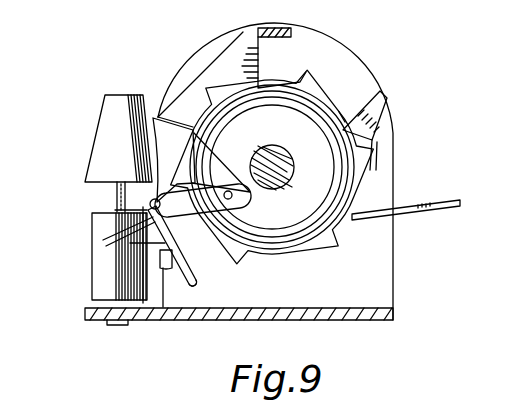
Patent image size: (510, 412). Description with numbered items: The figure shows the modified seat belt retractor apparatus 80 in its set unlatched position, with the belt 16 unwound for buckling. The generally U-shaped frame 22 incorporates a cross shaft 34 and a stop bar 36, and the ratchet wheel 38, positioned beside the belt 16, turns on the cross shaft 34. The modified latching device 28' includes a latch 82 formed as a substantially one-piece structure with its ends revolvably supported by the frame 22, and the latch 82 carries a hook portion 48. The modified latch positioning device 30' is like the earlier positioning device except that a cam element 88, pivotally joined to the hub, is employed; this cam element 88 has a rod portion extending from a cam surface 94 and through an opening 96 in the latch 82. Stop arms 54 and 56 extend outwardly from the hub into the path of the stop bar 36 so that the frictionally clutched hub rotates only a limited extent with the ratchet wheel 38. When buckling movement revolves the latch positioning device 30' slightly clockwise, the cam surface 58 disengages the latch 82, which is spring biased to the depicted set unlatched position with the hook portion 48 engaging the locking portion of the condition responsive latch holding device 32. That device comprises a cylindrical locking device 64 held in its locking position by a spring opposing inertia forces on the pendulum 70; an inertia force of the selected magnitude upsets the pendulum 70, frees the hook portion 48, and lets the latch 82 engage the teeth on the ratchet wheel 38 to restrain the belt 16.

The outboard belt 16 is at (430, 201).
The frame 22 is at (360, 321).
The latching device 28' is at (222, 292).
The latch positioning device 30' is at (314, 167).
The condition responsive latch holding device 32 is at (91, 272).
The cross shaft 34 is at (277, 150).
The stop bar 36 is at (291, 34).
The ratchet wheel 38 is at (331, 88).
The hook portion 48 is at (161, 262).
The stop arm 54 is at (380, 100).
The stop arm 56 is at (214, 60).
The cam surface 58 is at (157, 115).
The locking device 64 is at (91, 228).
The pendulum 70 is at (97, 122).
The seat belt retractor apparatus 80 is at (326, 36).
The latch 82 is at (183, 284).
The cam element 88 is at (196, 232).
The cam surface 94 is at (156, 198).
The opening 96 is at (176, 212).